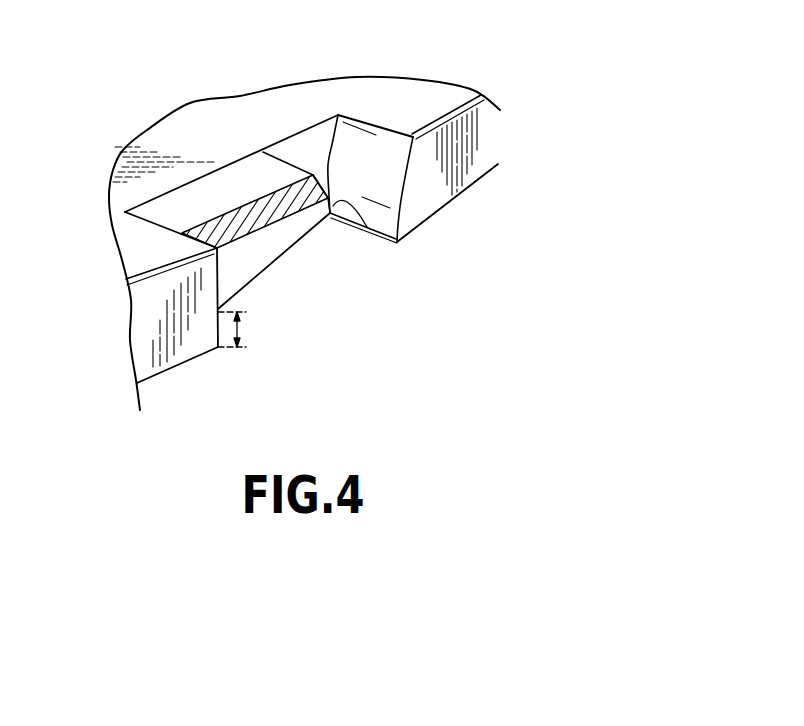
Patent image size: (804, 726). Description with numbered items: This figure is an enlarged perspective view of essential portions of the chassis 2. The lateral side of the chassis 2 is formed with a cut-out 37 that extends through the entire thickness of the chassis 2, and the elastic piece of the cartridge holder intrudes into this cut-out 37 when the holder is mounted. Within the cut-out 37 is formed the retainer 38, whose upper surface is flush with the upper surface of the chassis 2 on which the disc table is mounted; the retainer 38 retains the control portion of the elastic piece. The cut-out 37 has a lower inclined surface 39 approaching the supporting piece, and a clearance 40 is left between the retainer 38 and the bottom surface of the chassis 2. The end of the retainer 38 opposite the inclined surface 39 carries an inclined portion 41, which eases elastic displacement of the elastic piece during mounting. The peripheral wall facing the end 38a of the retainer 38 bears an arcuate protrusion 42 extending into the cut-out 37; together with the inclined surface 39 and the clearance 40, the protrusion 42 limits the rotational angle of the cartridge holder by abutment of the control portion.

The chassis 2 is at (228, 115).
The cut-out 37 is at (303, 133).
The retainer 38 is at (165, 210).
The end of the retainer 38a is at (367, 230).
The inclined surface 39 is at (263, 275).
The clearance 40 is at (240, 327).
The inclined portion 41 is at (210, 223).
The protrusion 42 is at (382, 147).